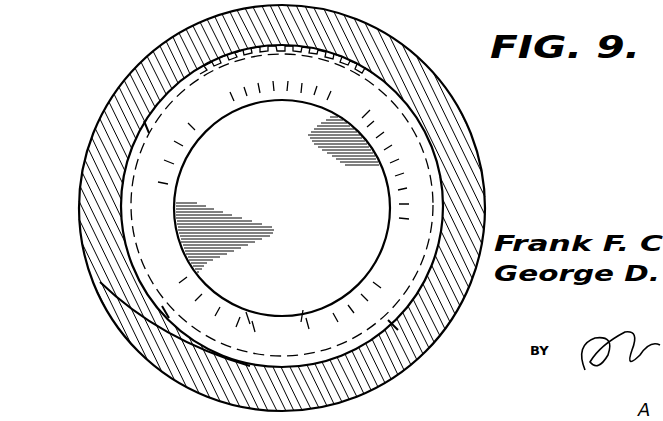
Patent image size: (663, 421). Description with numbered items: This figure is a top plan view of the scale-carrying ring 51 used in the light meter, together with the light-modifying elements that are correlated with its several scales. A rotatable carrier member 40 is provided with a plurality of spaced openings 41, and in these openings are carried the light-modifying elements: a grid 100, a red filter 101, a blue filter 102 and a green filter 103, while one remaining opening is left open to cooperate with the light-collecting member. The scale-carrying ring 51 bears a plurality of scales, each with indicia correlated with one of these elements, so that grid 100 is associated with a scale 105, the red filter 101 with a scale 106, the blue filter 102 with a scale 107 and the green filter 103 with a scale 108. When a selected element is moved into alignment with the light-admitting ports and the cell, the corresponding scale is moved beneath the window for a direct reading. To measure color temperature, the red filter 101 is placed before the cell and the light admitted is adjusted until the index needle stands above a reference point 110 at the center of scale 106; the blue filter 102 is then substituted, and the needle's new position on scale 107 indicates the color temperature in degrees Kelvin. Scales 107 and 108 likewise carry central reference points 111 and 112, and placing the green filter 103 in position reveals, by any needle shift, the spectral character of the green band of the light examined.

The grid 100 is at (347, 15).
The carrier member 40 is at (384, 76).
The spaced openings 41 is at (398, 110).
The green filter 103 is at (154, 133).
The blue filter 102 is at (165, 313).
The red filter 101 is at (393, 325).
The scale 105 is at (316, 88).
The scale-carrying ring 51 is at (217, 110).
The reference point 112 is at (172, 148).
The scale 108 is at (174, 203).
The reference point 111 is at (204, 302).
The scale 107 is at (245, 320).
The scale 106 is at (337, 316).
The reference point 110 is at (369, 301).